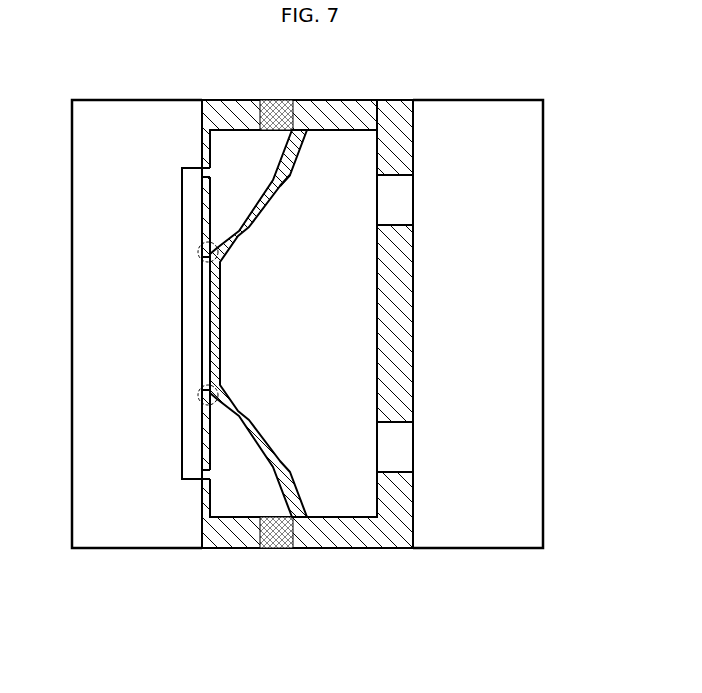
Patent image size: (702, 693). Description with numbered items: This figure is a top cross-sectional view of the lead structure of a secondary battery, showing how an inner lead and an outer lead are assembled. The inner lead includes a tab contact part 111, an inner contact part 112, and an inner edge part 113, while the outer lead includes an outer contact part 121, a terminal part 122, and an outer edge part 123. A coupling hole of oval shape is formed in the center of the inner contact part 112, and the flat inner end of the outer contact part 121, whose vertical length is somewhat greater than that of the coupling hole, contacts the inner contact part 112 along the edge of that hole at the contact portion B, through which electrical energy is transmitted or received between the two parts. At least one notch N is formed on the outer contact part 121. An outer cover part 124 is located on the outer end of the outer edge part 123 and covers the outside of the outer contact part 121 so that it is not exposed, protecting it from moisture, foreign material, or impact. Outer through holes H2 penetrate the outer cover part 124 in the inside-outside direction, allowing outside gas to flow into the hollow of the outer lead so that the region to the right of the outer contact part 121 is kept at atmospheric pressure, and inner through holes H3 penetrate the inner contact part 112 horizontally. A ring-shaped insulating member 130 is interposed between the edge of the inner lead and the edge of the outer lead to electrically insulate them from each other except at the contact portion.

The tab contact part 111 is at (137, 540).
The inner contact part 112 is at (200, 433).
The inner edge part 113 is at (226, 540).
The outer contact part 121 is at (263, 434).
The terminal part 122 is at (472, 540).
The outer edge part 123 is at (345, 540).
The outer cover part 124 is at (412, 323).
The insulating member 130 is at (282, 104).
The outer through hole H2 is at (417, 447).
The inner through hole H3 is at (226, 477).
The contact portion B is at (200, 252).
The notch N is at (289, 186).